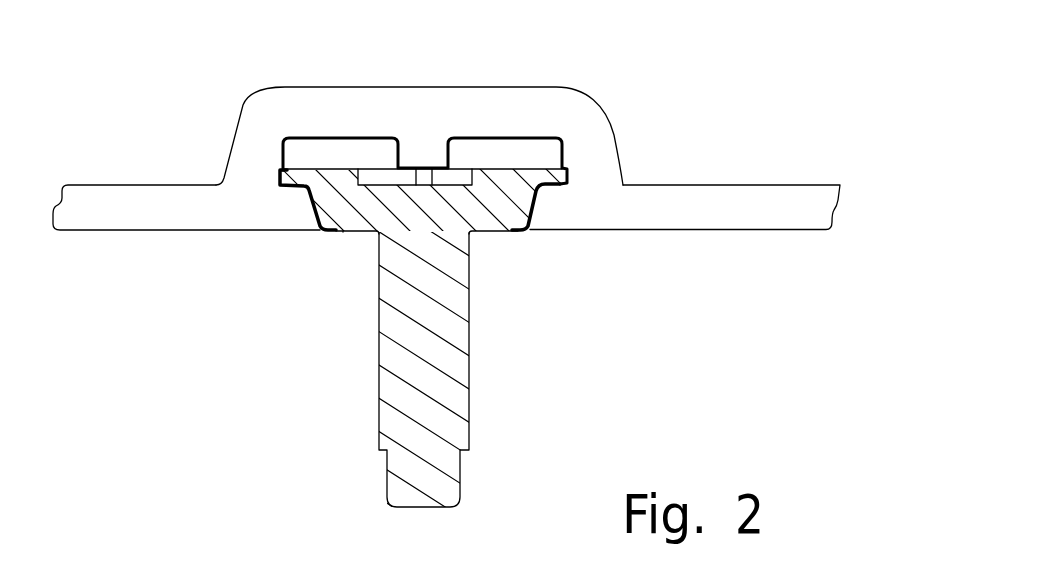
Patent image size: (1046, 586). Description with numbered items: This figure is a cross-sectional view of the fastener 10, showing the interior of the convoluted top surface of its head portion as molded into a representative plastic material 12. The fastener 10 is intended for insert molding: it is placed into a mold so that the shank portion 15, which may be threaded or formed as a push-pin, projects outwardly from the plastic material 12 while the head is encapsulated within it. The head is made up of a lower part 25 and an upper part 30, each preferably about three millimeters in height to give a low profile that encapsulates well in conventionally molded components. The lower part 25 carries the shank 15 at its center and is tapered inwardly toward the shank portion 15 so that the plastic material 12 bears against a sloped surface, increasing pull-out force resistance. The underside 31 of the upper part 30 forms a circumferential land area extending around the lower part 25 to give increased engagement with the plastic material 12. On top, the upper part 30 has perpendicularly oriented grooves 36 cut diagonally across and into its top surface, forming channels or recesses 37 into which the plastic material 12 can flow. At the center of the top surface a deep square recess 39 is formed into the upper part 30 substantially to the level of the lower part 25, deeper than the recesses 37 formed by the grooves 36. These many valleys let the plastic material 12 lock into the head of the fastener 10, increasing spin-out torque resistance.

The fastener 10 is at (250, 373).
The plastic material 12 is at (150, 198).
The shank portion 15 is at (377, 380).
The lower part 25 is at (343, 232).
The upper part 30 is at (535, 293).
The underside 31 is at (293, 188).
The grooves 36 is at (394, 152).
The recesses 37 is at (420, 142).
The deep square recess 39 is at (476, 220).